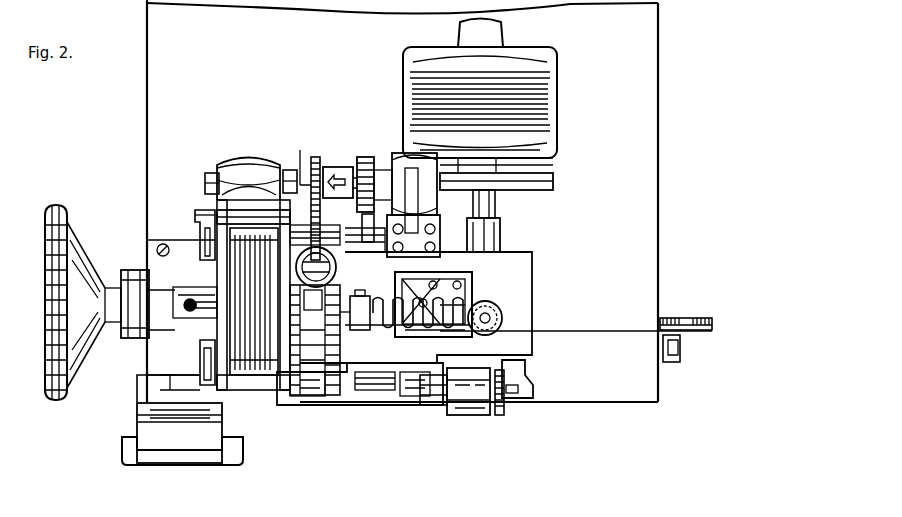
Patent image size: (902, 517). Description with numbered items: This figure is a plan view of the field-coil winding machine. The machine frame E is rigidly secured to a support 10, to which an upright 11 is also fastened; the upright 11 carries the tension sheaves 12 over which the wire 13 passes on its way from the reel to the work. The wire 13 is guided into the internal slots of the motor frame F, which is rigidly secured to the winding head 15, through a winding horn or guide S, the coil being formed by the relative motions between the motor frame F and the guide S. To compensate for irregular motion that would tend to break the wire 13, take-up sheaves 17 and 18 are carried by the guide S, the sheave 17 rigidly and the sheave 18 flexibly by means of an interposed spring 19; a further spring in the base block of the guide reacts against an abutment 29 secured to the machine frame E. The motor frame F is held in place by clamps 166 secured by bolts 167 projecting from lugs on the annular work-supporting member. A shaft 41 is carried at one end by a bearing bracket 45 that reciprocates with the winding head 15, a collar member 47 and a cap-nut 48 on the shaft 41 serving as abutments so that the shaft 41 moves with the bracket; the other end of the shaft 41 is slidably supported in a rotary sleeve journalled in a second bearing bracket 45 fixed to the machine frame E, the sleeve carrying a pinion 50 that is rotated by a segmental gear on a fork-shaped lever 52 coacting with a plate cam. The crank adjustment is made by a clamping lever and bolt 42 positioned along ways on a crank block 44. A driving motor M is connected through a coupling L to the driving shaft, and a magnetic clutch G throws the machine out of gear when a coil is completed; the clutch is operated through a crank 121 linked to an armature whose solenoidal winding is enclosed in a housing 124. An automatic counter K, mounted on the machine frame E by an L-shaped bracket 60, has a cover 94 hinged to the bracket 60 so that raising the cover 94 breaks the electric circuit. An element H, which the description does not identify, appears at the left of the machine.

The support 10 is at (598, 404).
The upright 11 is at (670, 365).
The tension sheaves 12 is at (680, 333).
The wire 13 is at (598, 333).
The winding head 15 is at (338, 268).
The take-up sheave 17 is at (368, 330).
The take-up sheave 18 is at (502, 318).
The spring 19 is at (393, 308).
The abutment 29 is at (422, 290).
The shaft 41 is at (545, 190).
The clamping lever and bolt 42 is at (312, 156).
The crank block 44 is at (340, 167).
The bearing bracket 45 is at (251, 162).
The collar member 47 is at (289, 168).
The cap-nut 48 is at (206, 174).
The pinion 50 is at (369, 158).
The fork-shaped lever 52 is at (362, 228).
The L-shaped bracket 60 is at (143, 390).
The cover 94 is at (174, 463).
The crank 121 is at (533, 372).
The housing 124 is at (470, 415).
The clamps 166 is at (196, 217).
The bolts 167 is at (247, 226).
The machine frame E is at (385, 405).
The motor frame F is at (268, 392).
The magnetic clutch G is at (508, 401).
The handwheel H is at (40, 298).
The automatic counter K is at (212, 462).
The coupling L is at (500, 232).
The driving motor M is at (545, 100).
The winding horn or guide S is at (183, 305).